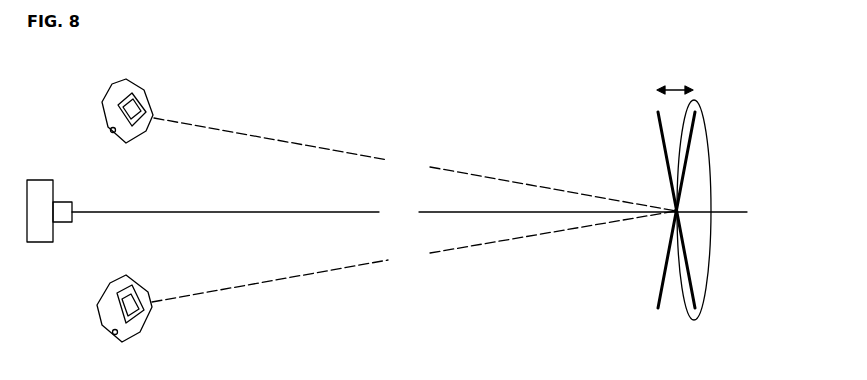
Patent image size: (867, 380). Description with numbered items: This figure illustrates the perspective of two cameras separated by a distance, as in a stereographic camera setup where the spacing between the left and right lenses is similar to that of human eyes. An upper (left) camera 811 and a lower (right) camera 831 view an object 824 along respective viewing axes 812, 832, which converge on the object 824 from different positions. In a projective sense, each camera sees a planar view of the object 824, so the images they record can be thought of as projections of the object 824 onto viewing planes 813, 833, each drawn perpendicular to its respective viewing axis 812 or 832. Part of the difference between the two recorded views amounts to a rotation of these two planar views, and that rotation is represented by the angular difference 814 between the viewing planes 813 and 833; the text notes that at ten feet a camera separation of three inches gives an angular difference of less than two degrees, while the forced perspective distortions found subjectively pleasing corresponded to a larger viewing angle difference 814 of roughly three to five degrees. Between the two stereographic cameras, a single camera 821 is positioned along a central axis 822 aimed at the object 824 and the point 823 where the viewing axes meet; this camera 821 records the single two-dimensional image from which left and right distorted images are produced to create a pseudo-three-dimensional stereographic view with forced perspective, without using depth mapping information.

The upper (left) camera 811 is at (143, 80).
The viewing axis 812 is at (415, 164).
The viewing plane 813 is at (695, 118).
The angular difference 814 is at (675, 88).
The camera 821 is at (53, 186).
The central axis 822 is at (409, 212).
The focal point 823 is at (676, 211).
The object 824 is at (712, 193).
The lower (right) camera 831 is at (142, 330).
The viewing axis 832 is at (414, 256).
The viewing plane 833 is at (690, 287).